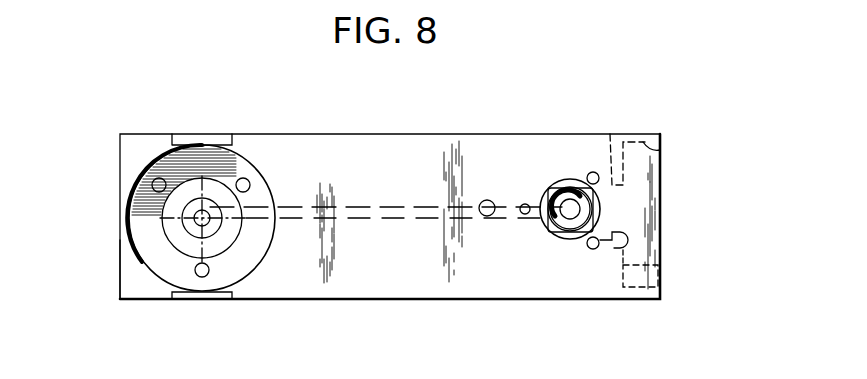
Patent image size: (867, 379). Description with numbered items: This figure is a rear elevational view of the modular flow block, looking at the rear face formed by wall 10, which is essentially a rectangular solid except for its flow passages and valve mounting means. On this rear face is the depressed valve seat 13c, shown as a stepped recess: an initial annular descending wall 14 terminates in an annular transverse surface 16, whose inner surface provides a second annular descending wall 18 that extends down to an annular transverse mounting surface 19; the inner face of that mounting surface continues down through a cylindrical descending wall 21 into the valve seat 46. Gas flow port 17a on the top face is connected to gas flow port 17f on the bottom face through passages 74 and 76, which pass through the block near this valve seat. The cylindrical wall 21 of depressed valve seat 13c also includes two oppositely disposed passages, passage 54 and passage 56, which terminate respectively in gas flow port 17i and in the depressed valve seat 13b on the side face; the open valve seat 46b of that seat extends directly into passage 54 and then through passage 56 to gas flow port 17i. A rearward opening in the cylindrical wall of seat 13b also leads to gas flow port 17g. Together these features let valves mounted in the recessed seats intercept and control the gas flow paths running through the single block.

The wall 10 is at (369, 253).
The depressed valve seat 13b is at (652, 218).
The depressed valve seat 13c is at (140, 258).
The annular descending wall 14 is at (667, 148).
The annular transverse surface 16 is at (652, 265).
The gas flow port 17a is at (203, 138).
The gas flow port 17f is at (193, 298).
The gas flow port 17g is at (603, 205).
The gas flow port 17i is at (127, 196).
The second annular descending wall 18 is at (610, 132).
The annular transverse mounting surface 19 is at (623, 252).
The cylindrical descending wall 21 is at (604, 178).
The valve seat 46 is at (210, 210).
The open valve seat 46b is at (543, 182).
The passage 54 is at (374, 207).
The passage 56 is at (128, 168).
The passage 74 is at (205, 215).
The passage 76 is at (193, 258).